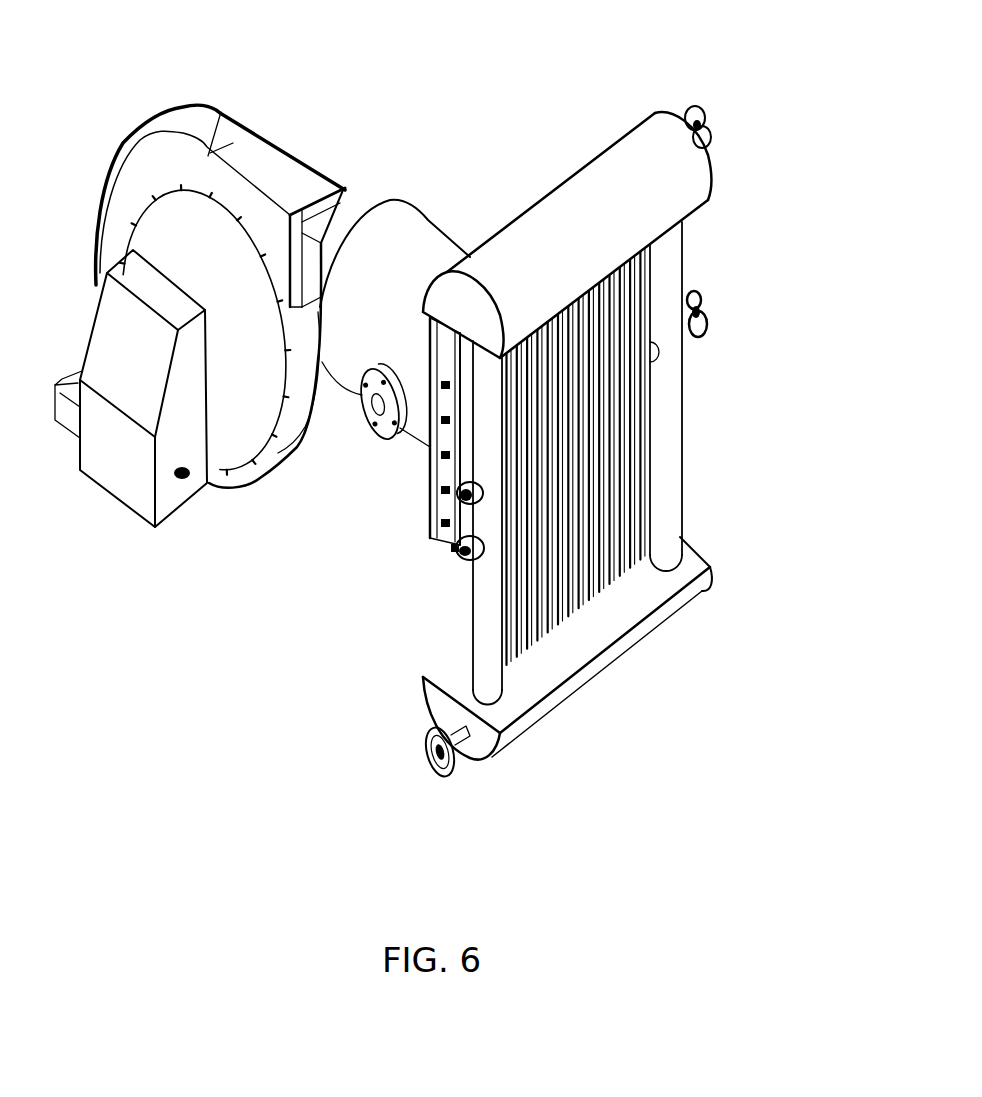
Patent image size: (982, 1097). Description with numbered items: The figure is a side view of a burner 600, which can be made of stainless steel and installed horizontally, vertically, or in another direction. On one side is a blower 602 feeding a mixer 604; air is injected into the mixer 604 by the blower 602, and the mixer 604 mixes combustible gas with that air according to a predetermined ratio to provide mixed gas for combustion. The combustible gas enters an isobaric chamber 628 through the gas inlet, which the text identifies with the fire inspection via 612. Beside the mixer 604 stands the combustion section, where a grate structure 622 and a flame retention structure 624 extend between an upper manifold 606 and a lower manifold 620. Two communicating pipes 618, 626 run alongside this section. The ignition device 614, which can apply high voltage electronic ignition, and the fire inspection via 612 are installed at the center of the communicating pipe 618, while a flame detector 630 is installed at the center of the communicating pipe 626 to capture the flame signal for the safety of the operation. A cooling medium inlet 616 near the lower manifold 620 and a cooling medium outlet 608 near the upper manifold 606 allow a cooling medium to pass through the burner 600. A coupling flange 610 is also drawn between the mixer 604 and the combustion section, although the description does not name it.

The burner 600 is at (63, 37).
The blower 602 is at (210, 130).
The mixer 604 is at (402, 257).
The upper manifold 606 is at (593, 213).
The cooling medium outlet 608 is at (705, 106).
The coupling flange 610 is at (368, 426).
The fire inspection via 612 is at (433, 531).
The ignition device 614 is at (460, 567).
The cooling medium inlet 616 is at (420, 739).
The communicating pipe 618 is at (488, 586).
The lower manifold 620 is at (607, 657).
The grate structure 622 is at (590, 441).
The flame retention structure 624 is at (575, 462).
The communicating pipe 626 is at (668, 467).
The isobaric chamber 628 is at (462, 430).
The flame detector 630 is at (697, 285).